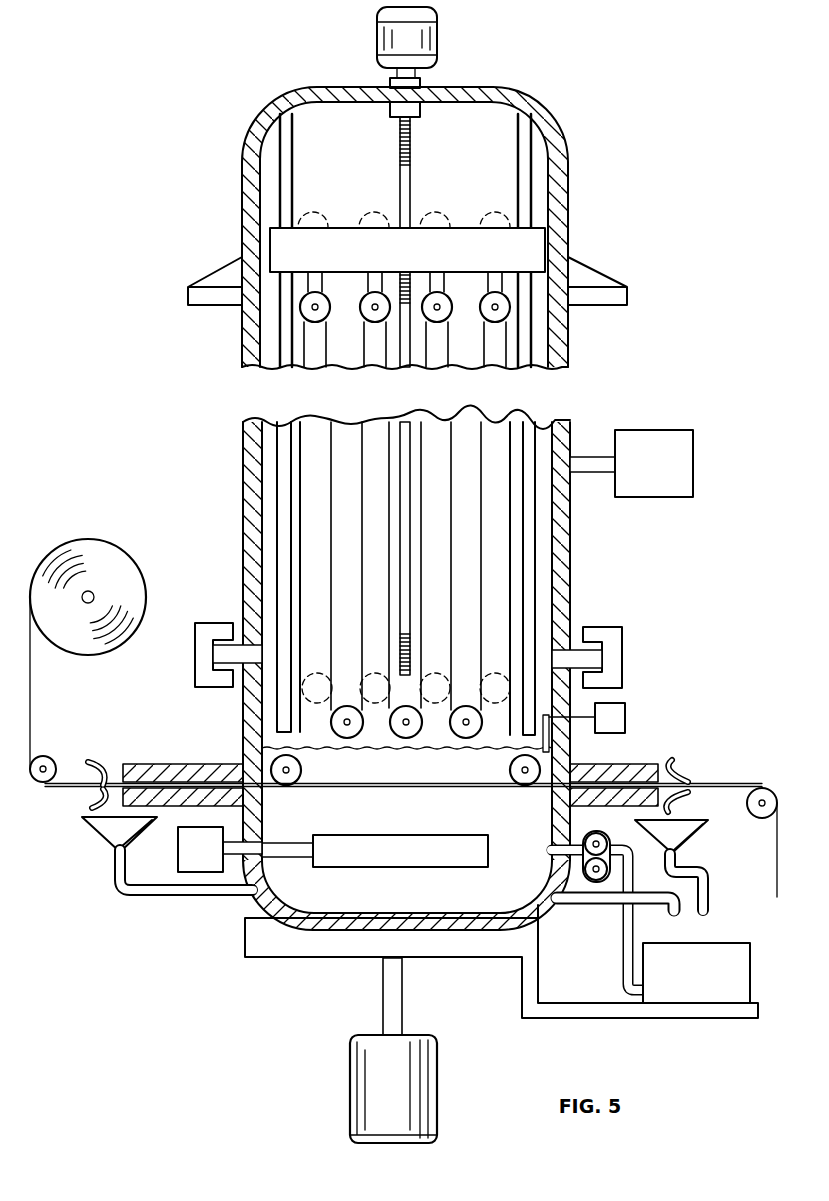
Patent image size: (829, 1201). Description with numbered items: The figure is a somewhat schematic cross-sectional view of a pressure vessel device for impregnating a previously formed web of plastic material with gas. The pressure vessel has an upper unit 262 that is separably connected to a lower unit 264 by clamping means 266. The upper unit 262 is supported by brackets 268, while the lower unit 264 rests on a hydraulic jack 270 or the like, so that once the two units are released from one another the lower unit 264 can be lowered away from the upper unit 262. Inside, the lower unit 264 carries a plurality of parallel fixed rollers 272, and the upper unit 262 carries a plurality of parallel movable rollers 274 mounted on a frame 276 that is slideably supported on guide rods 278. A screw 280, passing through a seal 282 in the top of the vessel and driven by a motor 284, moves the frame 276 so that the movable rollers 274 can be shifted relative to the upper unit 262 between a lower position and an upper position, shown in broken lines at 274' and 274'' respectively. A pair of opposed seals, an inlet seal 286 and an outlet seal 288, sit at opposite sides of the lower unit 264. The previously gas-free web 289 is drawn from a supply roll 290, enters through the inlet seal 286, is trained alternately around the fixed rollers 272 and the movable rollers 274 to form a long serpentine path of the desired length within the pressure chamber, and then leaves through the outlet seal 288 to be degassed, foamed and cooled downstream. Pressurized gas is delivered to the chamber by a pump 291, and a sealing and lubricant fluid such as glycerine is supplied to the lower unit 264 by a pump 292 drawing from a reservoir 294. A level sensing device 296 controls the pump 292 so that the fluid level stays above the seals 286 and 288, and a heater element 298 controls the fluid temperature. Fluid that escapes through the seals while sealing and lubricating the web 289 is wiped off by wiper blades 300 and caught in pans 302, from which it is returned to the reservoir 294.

The upper unit 262 is at (243, 484).
The lower unit 264 is at (243, 722).
The clamping means 266 is at (195, 657).
The brackets 268 is at (220, 275).
The hydraulic jack 270 is at (430, 1078).
The fixed rollers 272 is at (510, 771).
The movable rollers 274 is at (405, 336).
The movable rollers in lower position 274' is at (407, 637).
The movable rollers in upper position 274'' is at (404, 208).
The frame 276 is at (527, 247).
The guide rods 278 is at (279, 168).
The screw 280 is at (411, 150).
The seal 282 is at (420, 83).
The motor 284 is at (437, 40).
The inlet seal 286 is at (150, 764).
The outlet seal 288 is at (630, 766).
The web 289 is at (28, 732).
The supply roll 290 is at (97, 548).
The pump 291 is at (650, 430).
The pump 292 is at (560, 870).
The reservoir 294 is at (702, 943).
The level sensing device 296 is at (625, 716).
The heater element 298 is at (372, 848).
The wiper blades 300 is at (63, 762).
The pans 302 is at (106, 848).